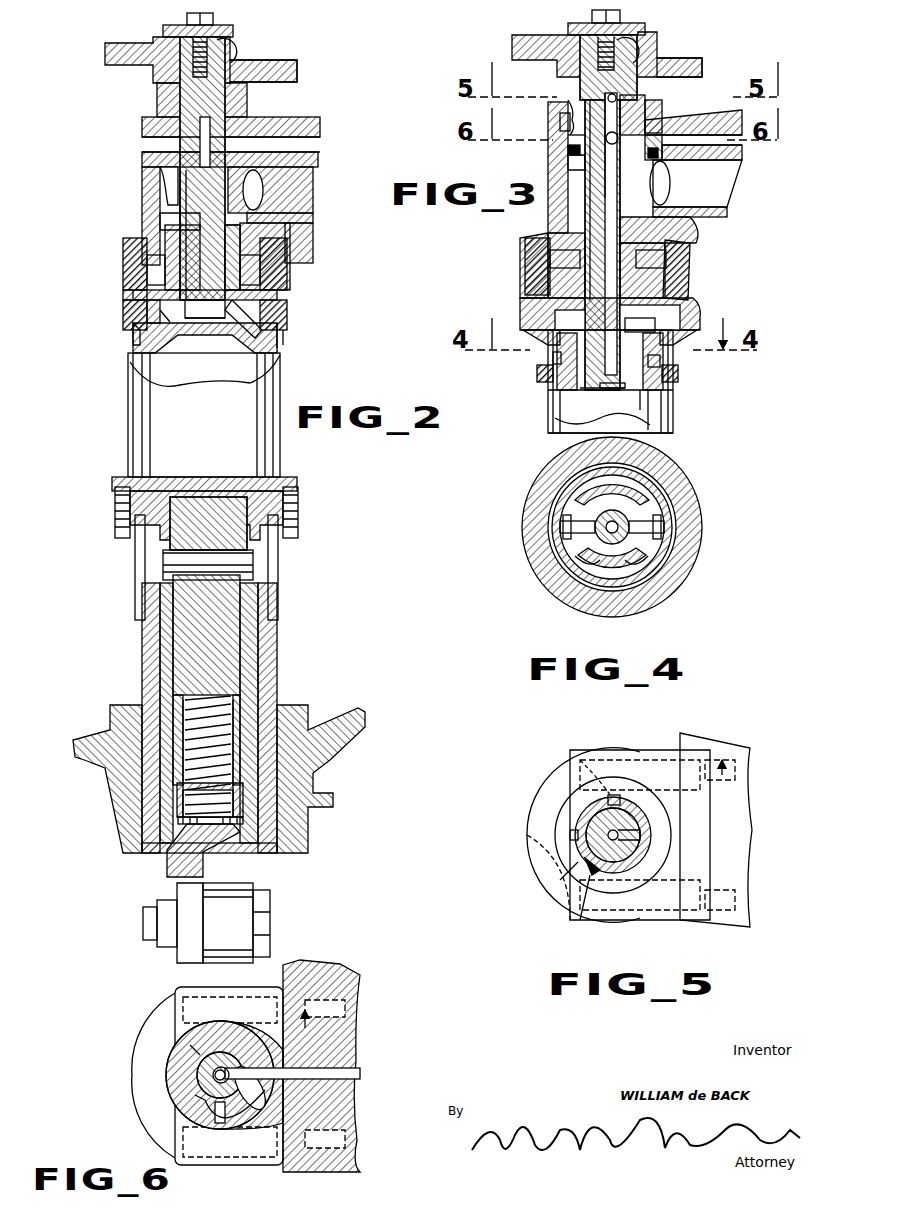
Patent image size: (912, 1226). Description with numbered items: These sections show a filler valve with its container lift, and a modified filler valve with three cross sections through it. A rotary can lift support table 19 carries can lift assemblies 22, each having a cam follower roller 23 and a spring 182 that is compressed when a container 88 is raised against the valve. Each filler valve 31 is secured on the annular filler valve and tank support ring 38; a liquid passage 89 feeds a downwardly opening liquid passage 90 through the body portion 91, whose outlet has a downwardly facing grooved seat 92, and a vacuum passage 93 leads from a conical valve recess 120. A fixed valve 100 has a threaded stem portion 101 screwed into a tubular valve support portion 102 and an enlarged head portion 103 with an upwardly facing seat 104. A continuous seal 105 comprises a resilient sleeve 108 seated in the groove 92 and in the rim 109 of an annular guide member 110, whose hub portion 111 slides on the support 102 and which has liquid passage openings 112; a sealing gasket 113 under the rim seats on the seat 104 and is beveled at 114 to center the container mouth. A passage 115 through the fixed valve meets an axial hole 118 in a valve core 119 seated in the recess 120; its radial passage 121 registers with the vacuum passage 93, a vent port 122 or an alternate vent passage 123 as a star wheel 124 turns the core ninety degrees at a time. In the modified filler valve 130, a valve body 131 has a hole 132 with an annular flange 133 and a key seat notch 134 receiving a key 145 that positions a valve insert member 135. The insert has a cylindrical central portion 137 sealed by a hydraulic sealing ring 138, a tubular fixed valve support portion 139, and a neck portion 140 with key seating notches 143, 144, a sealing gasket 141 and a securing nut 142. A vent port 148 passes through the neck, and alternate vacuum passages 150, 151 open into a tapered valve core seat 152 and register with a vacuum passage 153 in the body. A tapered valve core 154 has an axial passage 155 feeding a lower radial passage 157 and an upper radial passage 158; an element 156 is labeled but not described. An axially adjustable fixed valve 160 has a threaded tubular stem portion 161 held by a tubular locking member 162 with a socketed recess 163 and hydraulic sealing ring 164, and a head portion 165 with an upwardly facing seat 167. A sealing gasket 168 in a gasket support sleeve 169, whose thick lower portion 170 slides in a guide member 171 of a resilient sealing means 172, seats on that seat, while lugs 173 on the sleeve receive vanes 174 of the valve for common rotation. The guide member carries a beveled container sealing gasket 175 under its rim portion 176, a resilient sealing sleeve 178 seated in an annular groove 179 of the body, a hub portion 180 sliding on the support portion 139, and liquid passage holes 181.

In FIG. 2, the rotary can lift support table 19 is at (330, 750).
In FIG. 2, the can lift assembly 22 is at (149, 647).
In FIG. 2, the cam follower roller 23 is at (244, 924).
In FIG. 2, the filler valve 31 is at (141, 204).
In FIG. 2, the filler valve and tank support ring 38 is at (305, 158).
In FIG. 3, the filler valve and tank support ring 38 is at (738, 157).
In FIG. 5, the filler valve and tank support ring 38 is at (728, 858).
In FIG. 6, the filler valve and tank support ring 38 is at (340, 1117).
In FIG. 2, the container 88 is at (206, 432).
In FIG. 3, the container 88 is at (660, 440).
In FIG. 2, the liquid passage 89 is at (295, 178).
In FIG. 3, the liquid passage 89 is at (717, 205).
In FIG. 2, the downwardly opening liquid passage 90 is at (175, 220).
In FIG. 2, the valve body 91 is at (136, 182).
In FIG. 2, the downwardly facing grooved seat 92 is at (255, 237).
In FIG. 2, the vacuum passage 93 is at (300, 134).
In FIG. 3, the vacuum passage 93 is at (738, 140).
In FIG. 6, the vacuum passage 93 is at (330, 1075).
In FIG. 2, the fixed valve 100 is at (232, 315).
In FIG. 2, the externally threaded stem portion 101 is at (215, 260).
In FIG. 2, the tubular valve support portion 102 is at (250, 300).
In FIG. 2, the enlarged head portion 103 is at (275, 347).
In FIG. 2, the upwardly facing seat 104 is at (265, 331).
In FIG. 2, the continuous seal 105 is at (121, 306).
In FIG. 2, the resilient sleeve 108 is at (282, 262).
In FIG. 2, the rim 109 is at (122, 298).
In FIG. 2, the annular guide member 110 is at (172, 325).
In FIG. 2, the central hub portion 111 is at (245, 230).
In FIG. 2, the liquid passage openings 112 is at (203, 269).
In FIG. 2, the resilient annular sealing gasket 113 is at (125, 321).
In FIG. 2, the beveled portion 114 is at (130, 332).
In FIG. 2, the axial passage 115 is at (205, 295).
In FIG. 2, the axial hole 118 is at (200, 175).
In FIG. 2, the valve core 119 is at (192, 100).
In FIG. 2, the conical valve recess 120 is at (178, 120).
In FIG. 2, the radial passage 121 is at (225, 140).
In FIG. 2, the vent port 122 is at (160, 145).
In FIG. 2, the alternate radial vent passage 123 is at (260, 66).
In FIG. 2, the vacuum and vent valve actuating star wheel 124 is at (165, 54).
In FIG. 3, the modified filler valve 130 is at (541, 218).
In FIG. 3, the valve body 131 is at (550, 203).
In FIG. 6, the valve body 131 is at (190, 1030).
In FIG. 3, the hole 132 is at (560, 237).
In FIG. 3, the annular flange 133 is at (660, 127).
In FIG. 3, the key seat notch 134 is at (566, 118).
In FIG. 5, the key seat notch 134 is at (578, 835).
In FIG. 3, the valve insert member 135 is at (570, 162).
In FIG. 5, the valve insert member 135 is at (600, 872).
In FIG. 6, the valve insert member 135 is at (196, 1050).
In FIG. 3, the cylindrical central portion 137 is at (692, 150).
In FIG. 6, the cylindrical central portion 137 is at (216, 1076).
In FIG. 3, the hydraulic sealing ring 138 is at (658, 157).
In FIG. 3, the fixed valve support portion 139 is at (692, 226).
In FIG. 3, the neck portion 140 is at (577, 96).
In FIG. 5, the neck portion 140 is at (596, 882).
In FIG. 3, the sealing gasket 141 is at (570, 136).
In FIG. 3, the securing nut 142 is at (652, 118).
In FIG. 5, the securing nut 142 is at (626, 882).
In FIG. 3, the key seating notch 143 is at (570, 108).
In FIG. 5, the key seating notch 143 is at (583, 862).
In FIG. 5, the key seating notch 144 is at (593, 760).
In FIG. 3, the key 145 is at (575, 150).
In FIG. 3, the vent port 148 is at (655, 46).
In FIG. 5, the vent port 148 is at (627, 800).
In FIG. 3, the vacuum passage 150 is at (650, 172).
In FIG. 6, the vacuum passage 150 is at (242, 1110).
In FIG. 6, the vacuum passage 151 is at (212, 1120).
In FIG. 3, the tapered valve core seat 152 is at (590, 185).
In FIG. 5, the tapered valve core seat 152 is at (592, 866).
In FIG. 6, the tapered valve core seat 152 is at (190, 1095).
In FIG. 3, the vacuum passage 153 is at (690, 133).
In FIG. 6, the vacuum passage 153 is at (290, 1067).
In FIG. 3, the tapered valve core 154 is at (592, 45).
In FIG. 5, the tapered valve core 154 is at (604, 826).
In FIG. 6, the tapered valve core 154 is at (210, 1062).
In FIG. 3, the axial passage 155 is at (607, 195).
In FIG. 5, the axial passage 155 is at (607, 833).
In FIG. 6, the axial passage 155 is at (200, 1100).
In FIG. 3, the pin 156 is at (623, 99).
In FIG. 3, the lower radial core passage 157 is at (621, 139).
In FIG. 6, the lower radial core passage 157 is at (227, 1070).
In FIG. 5, the upper radial core passage 158 is at (665, 835).
In FIG. 3, the axially adjustable fixed valve 160 is at (548, 410).
In FIG. 4, the axially adjustable fixed valve 160 is at (628, 508).
In FIG. 3, the externally threaded tubular stem portion 161 is at (641, 325).
In FIG. 3, the tubular locking member 162 is at (651, 259).
In FIG. 3, the socketed recess 163 is at (565, 259).
In FIG. 3, the hydraulic sealing ring 164 is at (692, 264).
In FIG. 3, the head portion 165 is at (662, 418).
In FIG. 3, the upwardly facing seat 167 is at (652, 399).
In FIG. 3, the resilient sealing gasket 168 is at (580, 390).
In FIG. 3, the gasket support sleeve 169 is at (556, 359).
In FIG. 3, the thick lower portion 170 is at (640, 394).
In FIG. 3, the guide member 171 is at (680, 356).
In FIG. 3, the resilient sealing means 172 is at (703, 300).
In FIG. 3, the lugs 173 is at (562, 345).
In FIG. 4, the lugs 173 is at (590, 545).
In FIG. 3, the vanes 174 is at (652, 364).
In FIG. 4, the vanes 174 is at (562, 527).
In FIG. 3, the container sealing gasket 175 is at (667, 379).
In FIG. 3, the rim portion 176 is at (538, 373).
In FIG. 3, the resilient sealing sleeve 178 is at (528, 276).
In FIG. 3, the annular groove 179 is at (692, 241).
In FIG. 3, the hub portion 180 is at (570, 320).
In FIG. 3, the liquid passage holes 181 is at (680, 311).
In FIG. 2, the spring 182 is at (232, 708).